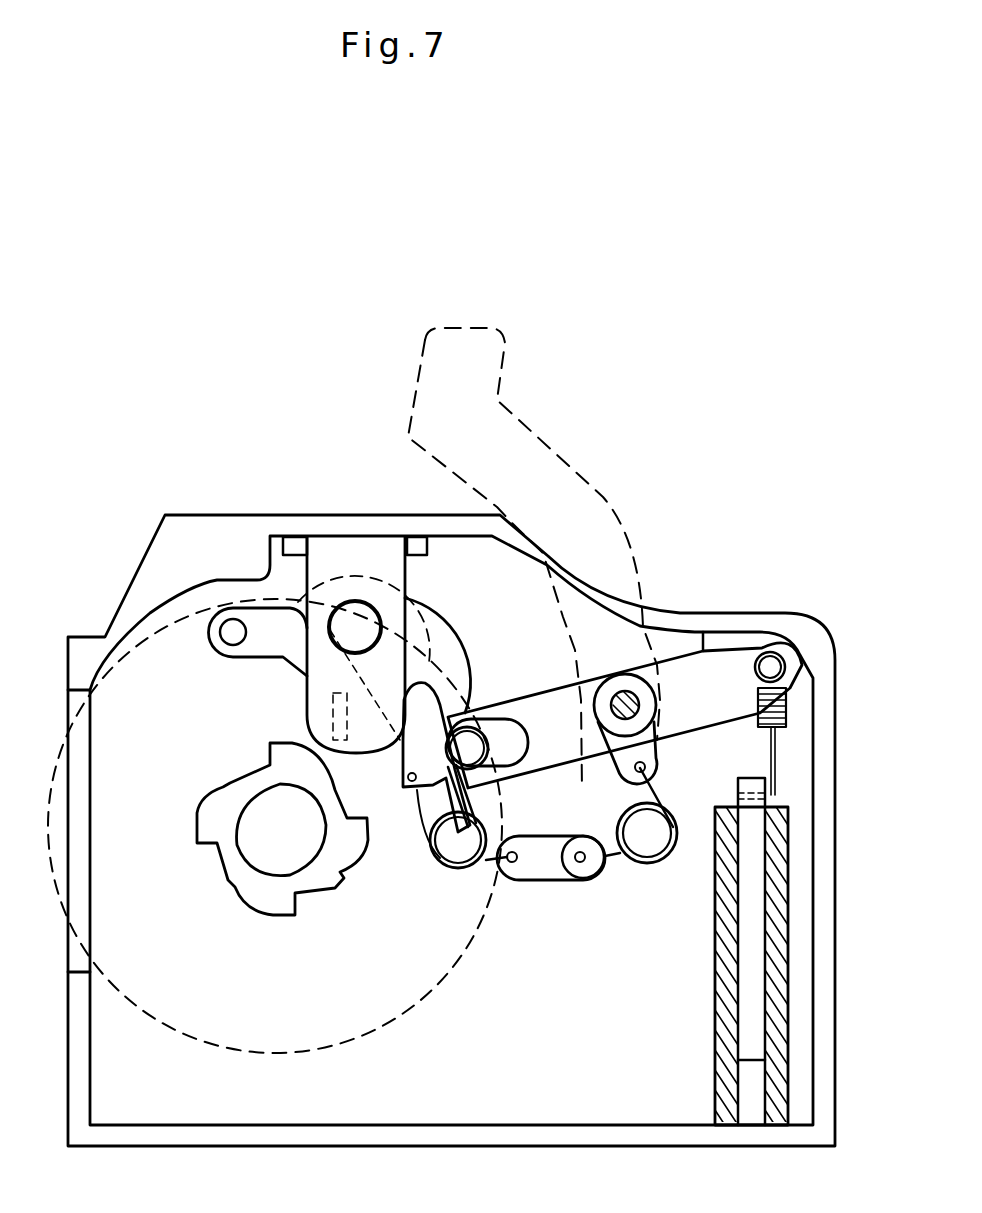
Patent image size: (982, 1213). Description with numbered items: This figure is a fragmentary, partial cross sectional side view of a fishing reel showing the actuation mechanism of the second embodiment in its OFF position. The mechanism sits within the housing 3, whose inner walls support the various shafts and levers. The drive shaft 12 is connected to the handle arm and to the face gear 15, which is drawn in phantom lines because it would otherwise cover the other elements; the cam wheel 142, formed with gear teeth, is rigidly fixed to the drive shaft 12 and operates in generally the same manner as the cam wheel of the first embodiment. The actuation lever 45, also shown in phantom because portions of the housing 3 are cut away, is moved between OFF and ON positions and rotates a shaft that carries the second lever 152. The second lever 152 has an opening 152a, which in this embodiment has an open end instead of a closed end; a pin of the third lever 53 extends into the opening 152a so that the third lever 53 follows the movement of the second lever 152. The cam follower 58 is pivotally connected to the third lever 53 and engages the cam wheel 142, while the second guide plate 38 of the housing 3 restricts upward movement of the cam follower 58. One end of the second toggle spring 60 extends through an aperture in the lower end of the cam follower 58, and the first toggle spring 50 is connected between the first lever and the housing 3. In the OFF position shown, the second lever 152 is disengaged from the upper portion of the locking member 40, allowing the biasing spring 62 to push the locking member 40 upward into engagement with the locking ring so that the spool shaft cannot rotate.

The housing 3 is at (540, 880).
The drive shaft 12 is at (263, 837).
The face gear 15 is at (340, 1022).
The second guide plate 38 is at (472, 797).
The locking member 40 is at (747, 1028).
The actuation lever 45 is at (508, 450).
The first toggle spring 50 is at (673, 867).
The third lever 53 is at (425, 640).
The cam follower 58 is at (277, 632).
The second toggle spring 60 is at (442, 863).
The biasing spring 62 is at (757, 720).
The cam wheel 142 is at (252, 875).
The second lever 152 is at (572, 733).
The opening 152a is at (505, 713).